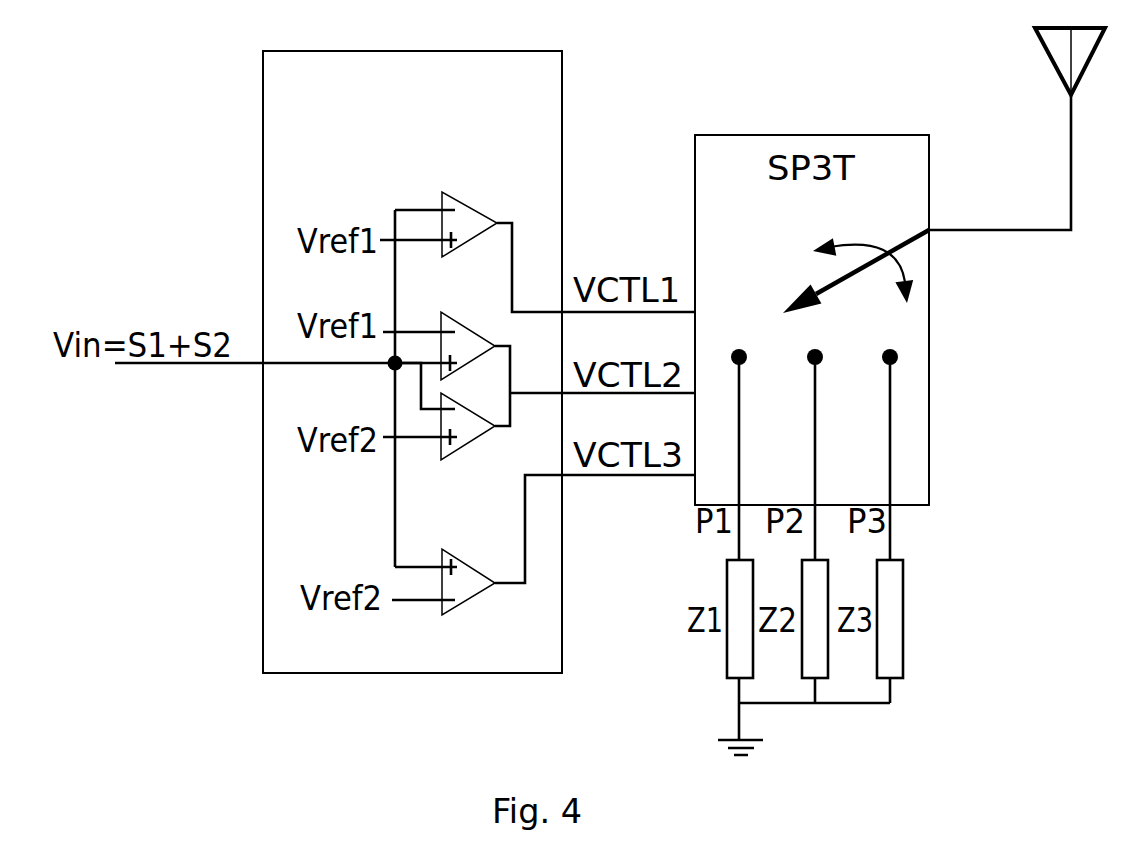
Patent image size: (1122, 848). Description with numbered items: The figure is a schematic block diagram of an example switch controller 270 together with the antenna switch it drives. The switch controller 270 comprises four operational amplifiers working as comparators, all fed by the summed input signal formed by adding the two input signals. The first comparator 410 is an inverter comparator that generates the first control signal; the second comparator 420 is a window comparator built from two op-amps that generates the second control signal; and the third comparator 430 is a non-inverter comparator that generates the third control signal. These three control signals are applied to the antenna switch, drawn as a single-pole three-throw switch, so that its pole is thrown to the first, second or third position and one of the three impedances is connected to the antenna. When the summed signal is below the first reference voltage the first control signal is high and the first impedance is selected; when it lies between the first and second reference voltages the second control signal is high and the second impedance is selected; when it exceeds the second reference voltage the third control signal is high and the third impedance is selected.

The switch controller 270 is at (320, 652).
The first comparator 410 is at (473, 212).
The second comparator 420 is at (492, 367).
The third comparator 430 is at (470, 598).